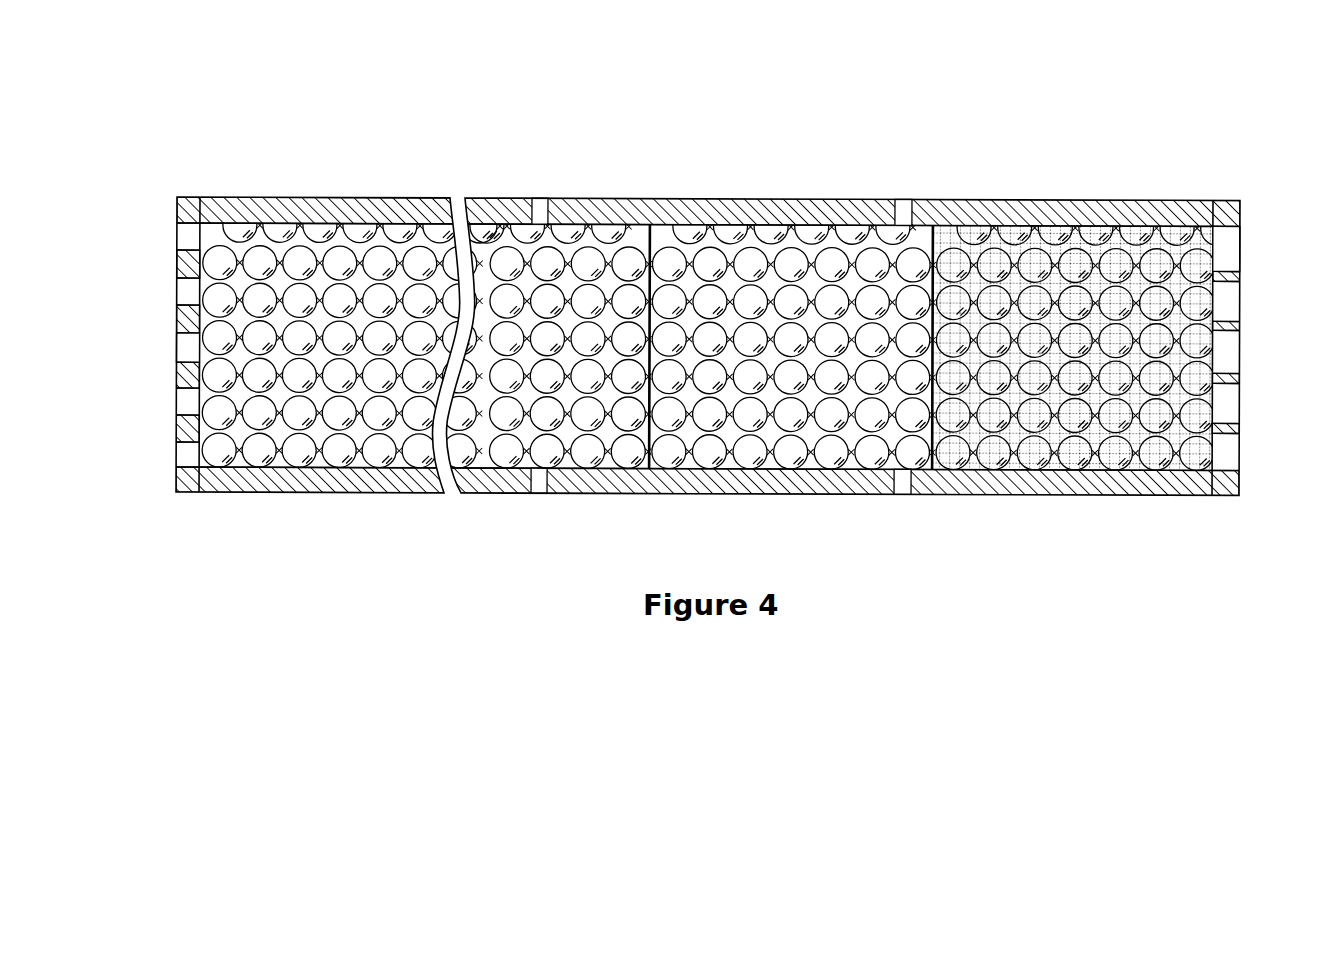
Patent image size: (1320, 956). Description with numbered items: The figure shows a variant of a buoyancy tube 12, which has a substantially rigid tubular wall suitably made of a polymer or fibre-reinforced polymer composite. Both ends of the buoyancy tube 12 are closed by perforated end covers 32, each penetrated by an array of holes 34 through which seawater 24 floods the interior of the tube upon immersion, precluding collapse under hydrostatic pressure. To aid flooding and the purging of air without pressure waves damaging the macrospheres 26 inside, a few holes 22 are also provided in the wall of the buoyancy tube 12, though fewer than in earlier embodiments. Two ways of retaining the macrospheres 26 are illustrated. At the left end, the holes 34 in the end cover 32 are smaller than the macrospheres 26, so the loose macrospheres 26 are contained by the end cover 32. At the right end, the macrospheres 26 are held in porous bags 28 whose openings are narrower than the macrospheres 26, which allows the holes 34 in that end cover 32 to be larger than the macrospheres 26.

The buoyancy tube 12 is at (153, 176).
The holes 22 is at (535, 198).
The seawater 24 is at (222, 198).
The macrospheres 26 is at (343, 452).
The porous bags 28 is at (674, 199).
The end covers 32 is at (180, 492).
The holes 34 is at (189, 350).